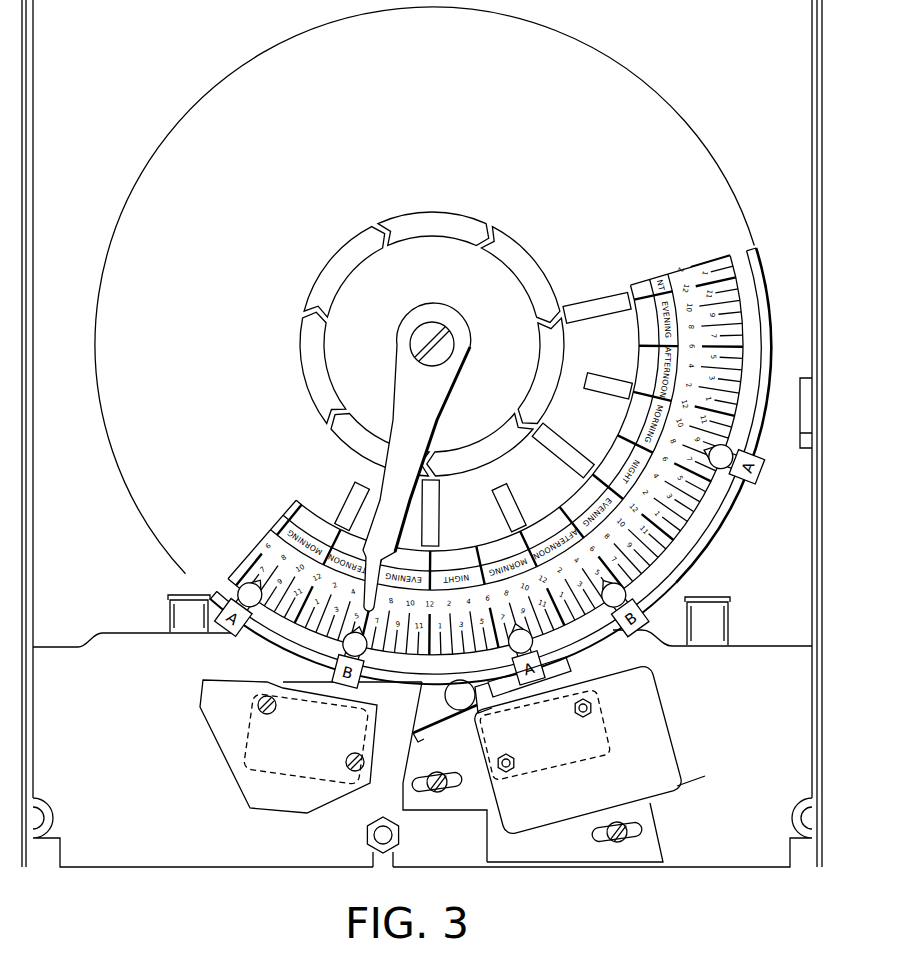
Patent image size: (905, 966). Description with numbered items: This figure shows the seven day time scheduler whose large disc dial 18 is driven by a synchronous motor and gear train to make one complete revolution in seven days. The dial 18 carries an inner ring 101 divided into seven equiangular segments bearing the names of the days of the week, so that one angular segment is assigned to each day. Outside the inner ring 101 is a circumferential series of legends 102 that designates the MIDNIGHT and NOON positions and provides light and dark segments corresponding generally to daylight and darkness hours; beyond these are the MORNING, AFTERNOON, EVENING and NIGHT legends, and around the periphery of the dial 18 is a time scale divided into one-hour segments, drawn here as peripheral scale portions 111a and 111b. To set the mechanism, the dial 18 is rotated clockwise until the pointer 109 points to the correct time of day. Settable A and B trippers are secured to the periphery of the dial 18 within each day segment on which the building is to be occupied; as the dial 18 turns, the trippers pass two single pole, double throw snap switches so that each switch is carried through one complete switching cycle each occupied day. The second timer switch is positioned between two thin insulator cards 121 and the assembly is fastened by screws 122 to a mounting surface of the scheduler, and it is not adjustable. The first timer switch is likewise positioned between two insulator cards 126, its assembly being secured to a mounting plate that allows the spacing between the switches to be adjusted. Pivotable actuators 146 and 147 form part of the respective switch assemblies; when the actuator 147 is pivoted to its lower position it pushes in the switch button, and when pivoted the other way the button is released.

The disc dial 18 is at (735, 192).
The inner ring 101 is at (540, 270).
The circumferential series of legends 102 is at (558, 433).
The pointer 109 is at (438, 430).
The first scale strip 111a is at (735, 497).
The second scale strip 111b is at (655, 592).
The insulator cards 121 is at (222, 679).
The screws 122 is at (276, 709).
The insulator cards 126 is at (678, 782).
The pivotable actuator 146 is at (380, 705).
The pivotable actuator 147 is at (573, 663).